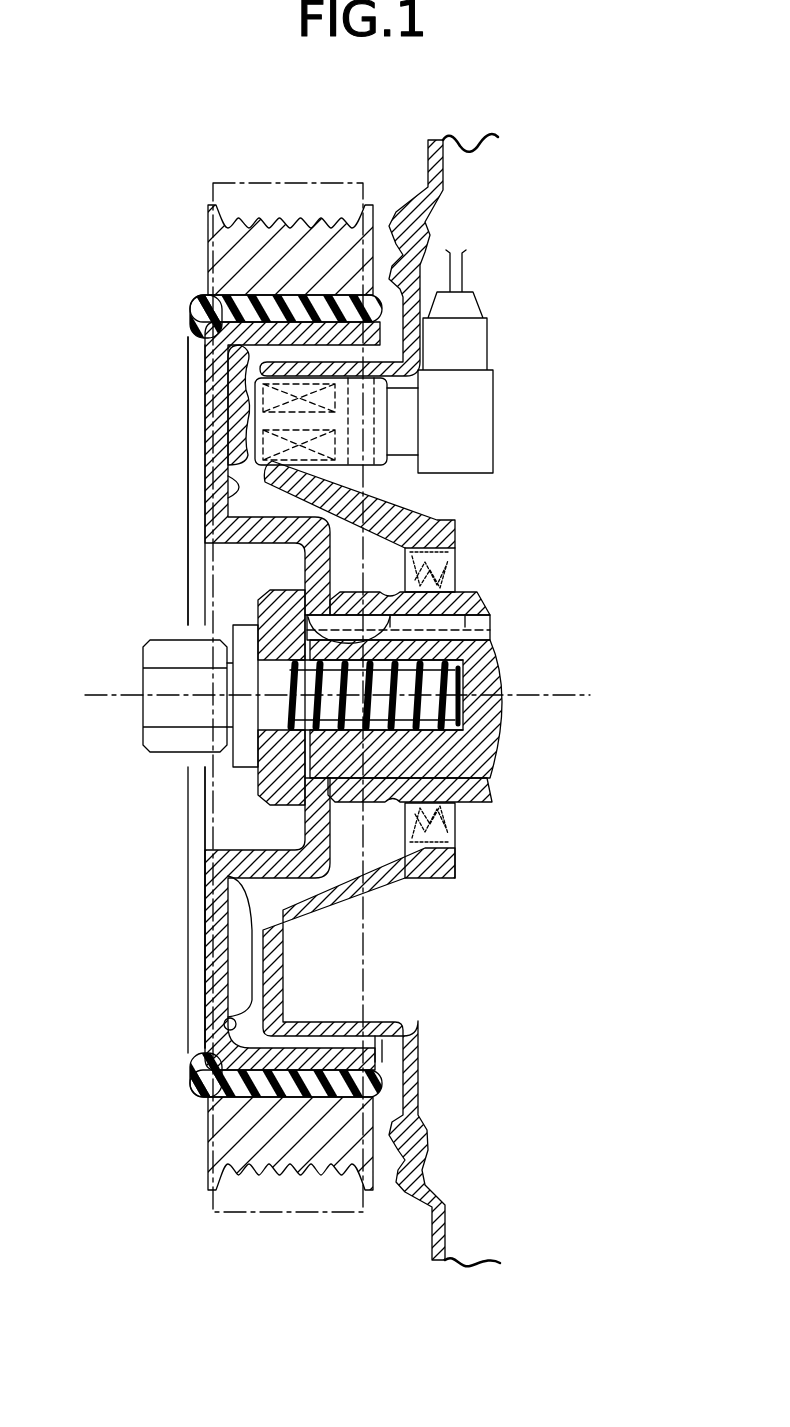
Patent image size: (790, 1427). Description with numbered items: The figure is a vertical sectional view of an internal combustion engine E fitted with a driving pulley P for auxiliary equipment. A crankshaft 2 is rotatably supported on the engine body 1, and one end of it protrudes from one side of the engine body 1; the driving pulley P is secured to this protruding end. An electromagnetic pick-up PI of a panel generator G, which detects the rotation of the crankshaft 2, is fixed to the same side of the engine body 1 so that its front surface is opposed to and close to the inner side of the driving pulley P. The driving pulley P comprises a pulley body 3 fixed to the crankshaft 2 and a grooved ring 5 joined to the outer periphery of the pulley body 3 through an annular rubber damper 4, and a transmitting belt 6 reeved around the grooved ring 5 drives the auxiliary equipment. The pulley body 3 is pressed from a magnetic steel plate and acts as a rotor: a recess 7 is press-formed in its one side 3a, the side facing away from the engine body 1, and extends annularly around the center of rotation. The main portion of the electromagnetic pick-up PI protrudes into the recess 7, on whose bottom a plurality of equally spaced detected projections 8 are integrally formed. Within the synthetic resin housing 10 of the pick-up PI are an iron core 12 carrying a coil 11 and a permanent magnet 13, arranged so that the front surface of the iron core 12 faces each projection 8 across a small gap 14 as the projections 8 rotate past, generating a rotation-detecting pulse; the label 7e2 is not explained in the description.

The engine body 1 is at (428, 150).
The crankshaft 2 is at (492, 656).
The pulley body 3 is at (204, 868).
The one side of the pulley body 3a is at (233, 490).
The annular rubber damper 4 is at (195, 1080).
The grooved ring 5 is at (208, 226).
The transmitting belt 6 is at (290, 1212).
The recess 7 is at (232, 1033).
The cover plate 7e2 is at (205, 422).
The detected projections 8 is at (237, 431).
The housing 10 is at (400, 410).
The coil 11 is at (268, 369).
The iron core 12 is at (300, 432).
The permanent magnet 13 is at (376, 448).
The gap 14 is at (230, 410).
The panel generator G is at (514, 342).
The driving pulley P is at (193, 1140).
The electromagnetic pick-up PI is at (431, 480).
The internal combustion engine E is at (424, 1225).